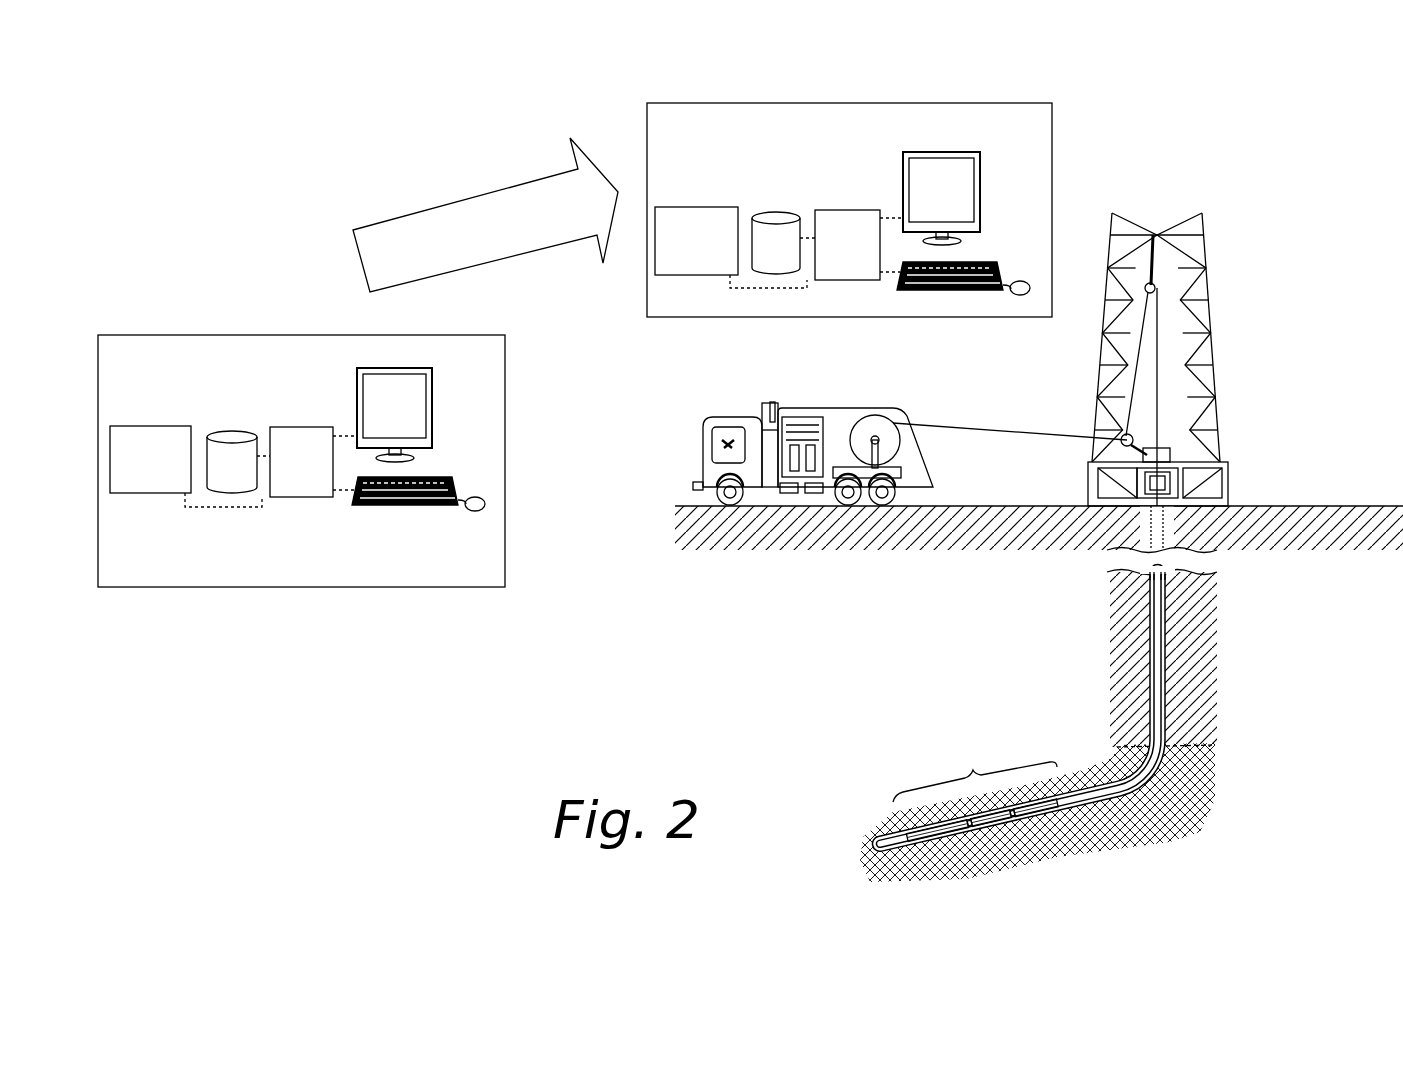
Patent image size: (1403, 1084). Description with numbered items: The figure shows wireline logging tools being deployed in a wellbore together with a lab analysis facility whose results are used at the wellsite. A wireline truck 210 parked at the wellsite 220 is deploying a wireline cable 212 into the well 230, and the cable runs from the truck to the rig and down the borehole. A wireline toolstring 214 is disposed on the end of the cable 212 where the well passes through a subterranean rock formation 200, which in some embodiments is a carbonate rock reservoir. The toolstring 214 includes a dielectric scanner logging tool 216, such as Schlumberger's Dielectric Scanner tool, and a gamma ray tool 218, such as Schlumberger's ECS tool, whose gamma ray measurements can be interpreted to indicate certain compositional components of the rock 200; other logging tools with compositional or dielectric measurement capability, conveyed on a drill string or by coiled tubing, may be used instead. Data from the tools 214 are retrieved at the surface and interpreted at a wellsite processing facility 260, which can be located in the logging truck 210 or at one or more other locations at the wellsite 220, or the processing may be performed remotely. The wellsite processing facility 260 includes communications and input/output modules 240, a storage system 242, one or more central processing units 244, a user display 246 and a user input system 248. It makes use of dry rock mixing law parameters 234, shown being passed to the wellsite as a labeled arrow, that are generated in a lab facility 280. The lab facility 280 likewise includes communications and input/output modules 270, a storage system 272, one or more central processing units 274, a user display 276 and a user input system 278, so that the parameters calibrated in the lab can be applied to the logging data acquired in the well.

The subterranean rock formation 200 is at (1186, 825).
The wireline truck 210 is at (850, 408).
The wireline cable 212 is at (983, 431).
The wireline toolstring 214 is at (975, 795).
The dielectric scanner logging tool 216 is at (991, 818).
The gamma ray tool 218 is at (1036, 808).
The wellsite 220 is at (1260, 451).
The well 230 is at (1150, 622).
The dry rock mixing law parameters 234 is at (475, 193).
The communications and input/output modules 240 is at (718, 249).
The storage system 242 is at (797, 256).
The central processing units 244 is at (869, 256).
The user display 246 is at (962, 203).
The user input system 248 is at (1004, 250).
The wellsite processing facility 260 is at (1031, 140).
The communications and input/output modules 270 is at (171, 467).
The storage system 272 is at (253, 473).
The central processing units 274 is at (323, 473).
The user display 276 is at (415, 419).
The user input system 278 is at (461, 465).
The lab facility 280 is at (476, 565).